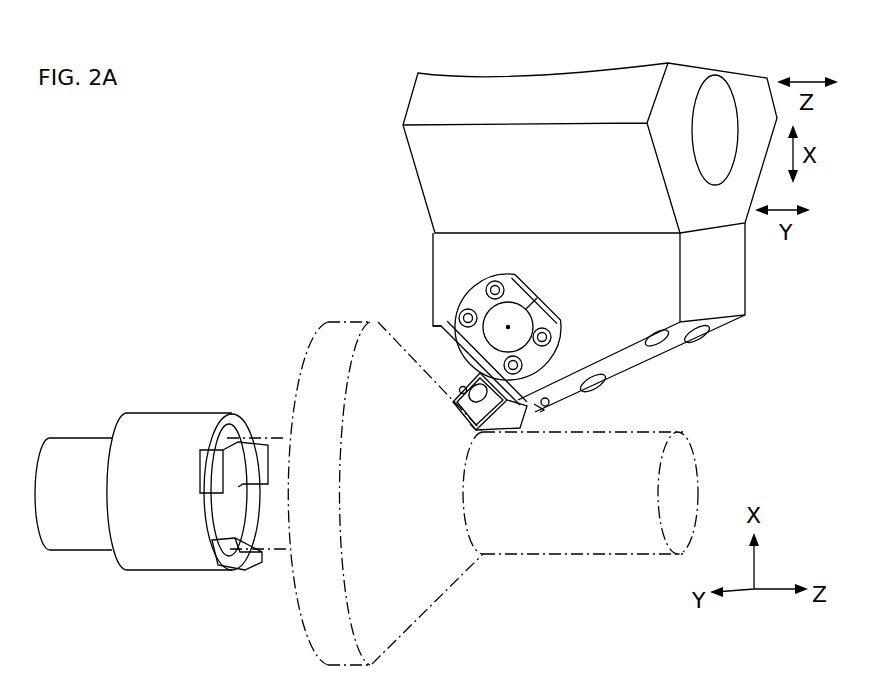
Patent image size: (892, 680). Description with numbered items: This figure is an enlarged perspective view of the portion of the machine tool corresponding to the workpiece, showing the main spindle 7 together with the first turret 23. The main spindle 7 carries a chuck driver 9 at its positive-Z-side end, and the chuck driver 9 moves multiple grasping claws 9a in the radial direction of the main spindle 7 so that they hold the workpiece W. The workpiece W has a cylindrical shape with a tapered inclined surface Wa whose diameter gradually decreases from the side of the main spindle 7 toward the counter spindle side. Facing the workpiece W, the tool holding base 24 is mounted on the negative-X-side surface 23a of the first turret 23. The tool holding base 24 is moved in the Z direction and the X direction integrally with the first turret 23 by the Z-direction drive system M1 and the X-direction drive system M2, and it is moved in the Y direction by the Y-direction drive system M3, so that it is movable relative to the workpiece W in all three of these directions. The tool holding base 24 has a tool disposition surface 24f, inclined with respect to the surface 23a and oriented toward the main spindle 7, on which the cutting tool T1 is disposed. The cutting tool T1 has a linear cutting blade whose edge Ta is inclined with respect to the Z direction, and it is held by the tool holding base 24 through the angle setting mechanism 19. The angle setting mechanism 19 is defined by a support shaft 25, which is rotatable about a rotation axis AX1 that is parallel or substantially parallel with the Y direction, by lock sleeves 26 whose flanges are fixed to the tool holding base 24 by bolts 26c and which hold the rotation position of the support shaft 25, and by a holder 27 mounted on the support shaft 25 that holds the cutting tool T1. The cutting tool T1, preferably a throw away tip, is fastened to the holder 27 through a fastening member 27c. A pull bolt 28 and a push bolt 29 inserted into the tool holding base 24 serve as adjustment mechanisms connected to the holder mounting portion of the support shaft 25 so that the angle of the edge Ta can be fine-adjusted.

The main spindle 7 is at (80, 447).
The chuck driver 9 is at (160, 425).
The grasping claws 9a is at (228, 418).
The angle setting mechanism 19 is at (578, 320).
The first turret 23 is at (425, 83).
The negative-X-side surface 23a is at (487, 234).
The tool holding base 24 is at (747, 289).
The tool disposition surface 24f is at (440, 327).
The support shaft 25 is at (492, 313).
The lock sleeves 26 is at (483, 290).
The bolts 26c is at (551, 338).
The holder 27 is at (512, 405).
The fastening member 27c is at (500, 414).
The pull bolt 28 is at (549, 401).
The push bolt 29 is at (542, 408).
The rotation axis AX1 is at (508, 327).
The cutting tool T1 is at (477, 381).
The edge Ta is at (457, 417).
The workpiece W is at (632, 548).
The inclined surface Wa is at (415, 558).
The Z-direction drive system M1 is at (400, 95).
The X-direction drive system M2 is at (397, 147).
The Y-direction drive system M3 is at (410, 199).